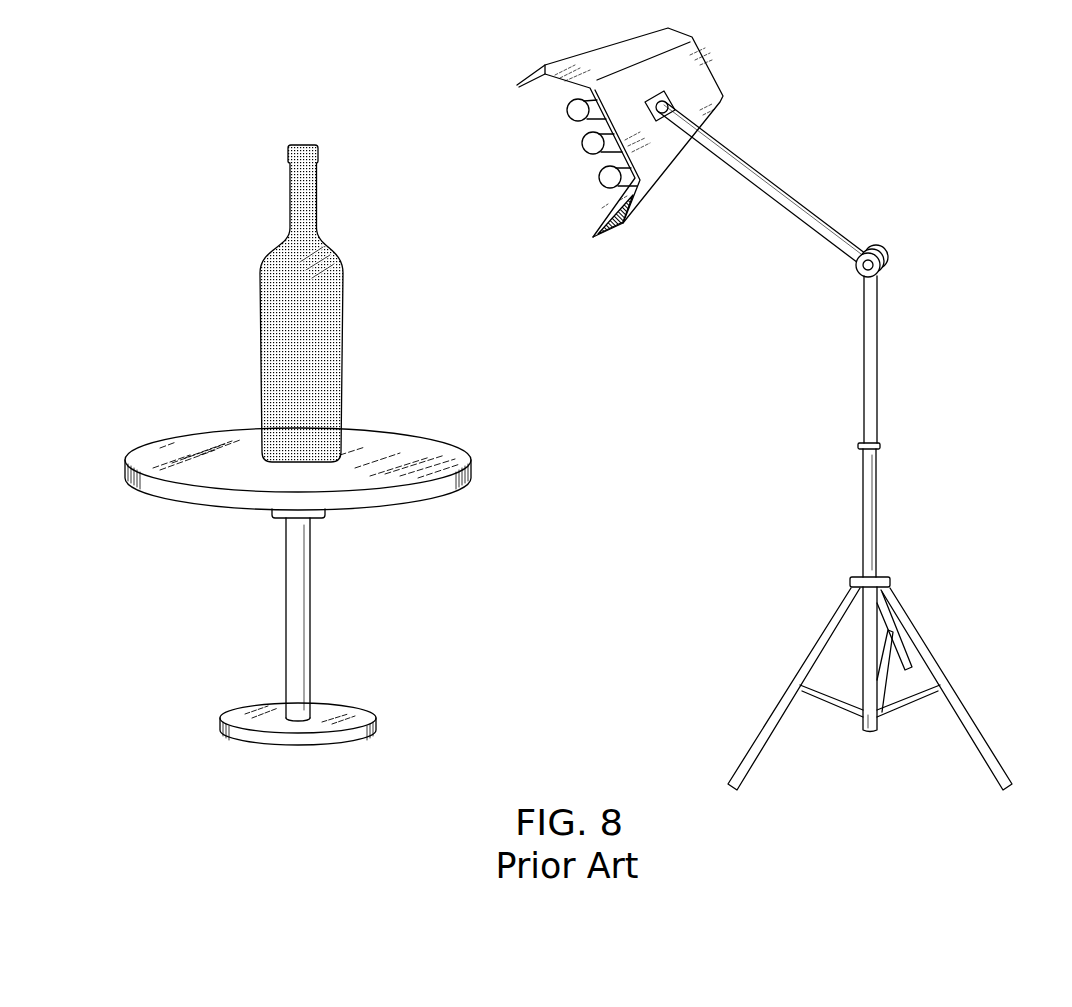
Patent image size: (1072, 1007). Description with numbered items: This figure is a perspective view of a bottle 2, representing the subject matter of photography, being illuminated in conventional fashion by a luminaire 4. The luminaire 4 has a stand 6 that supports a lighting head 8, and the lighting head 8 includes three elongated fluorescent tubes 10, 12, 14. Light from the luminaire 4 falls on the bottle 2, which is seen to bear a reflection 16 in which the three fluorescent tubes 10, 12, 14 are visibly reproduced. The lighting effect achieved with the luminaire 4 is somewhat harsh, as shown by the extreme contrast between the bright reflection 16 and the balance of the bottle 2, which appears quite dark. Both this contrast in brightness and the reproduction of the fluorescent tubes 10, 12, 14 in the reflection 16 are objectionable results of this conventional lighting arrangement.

The bottle 2 is at (321, 303).
The luminaire 4 is at (754, 409).
The stand 6 is at (873, 372).
The lighting head 8 is at (616, 132).
The fluorescent tube 10 is at (572, 114).
The fluorescent tube 12 is at (592, 149).
The fluorescent tube 14 is at (609, 180).
The reflection 16 is at (327, 257).